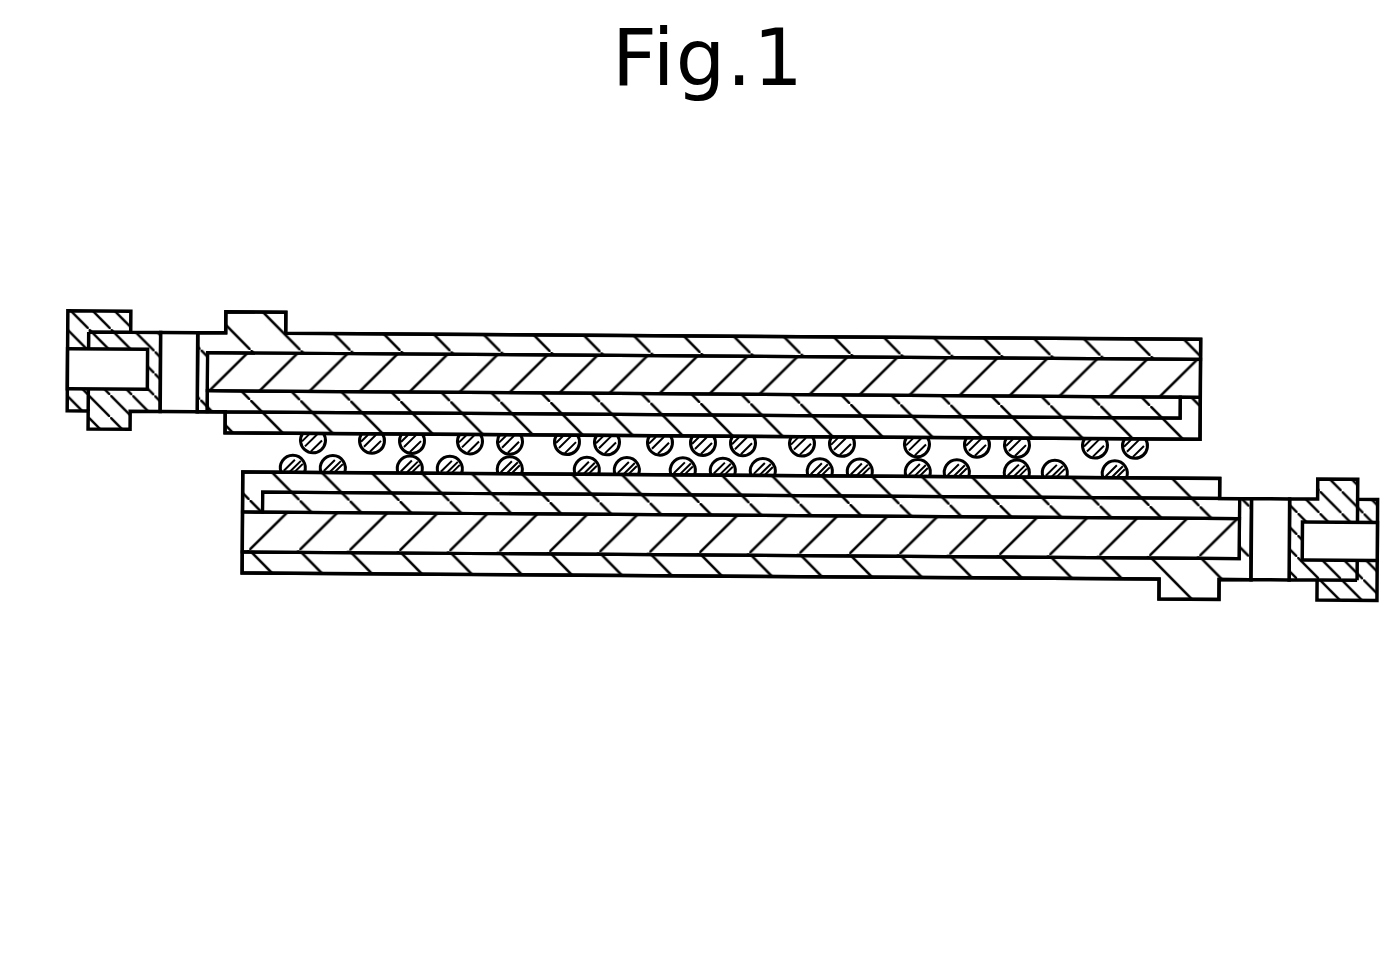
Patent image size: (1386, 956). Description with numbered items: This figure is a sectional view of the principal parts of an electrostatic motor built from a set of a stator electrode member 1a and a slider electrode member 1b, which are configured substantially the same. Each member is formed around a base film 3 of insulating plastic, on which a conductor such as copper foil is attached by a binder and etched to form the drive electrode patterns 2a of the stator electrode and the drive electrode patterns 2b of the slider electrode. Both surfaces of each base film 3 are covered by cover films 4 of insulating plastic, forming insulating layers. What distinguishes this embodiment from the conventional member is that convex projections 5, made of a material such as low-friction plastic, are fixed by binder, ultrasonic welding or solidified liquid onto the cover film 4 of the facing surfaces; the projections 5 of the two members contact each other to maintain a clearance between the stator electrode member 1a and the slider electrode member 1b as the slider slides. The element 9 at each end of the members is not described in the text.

The stator electrode member 1a is at (884, 692).
The slider electrode member 1b is at (993, 277).
The drive electrode patterns of the stator electrode 2a is at (752, 512).
The drive electrode patterns of the slider electrode 2b is at (845, 405).
The base film 3 is at (622, 375).
The cover film 4 is at (449, 345).
The projections 5 is at (562, 458).
The fastening pin 9 is at (182, 348).